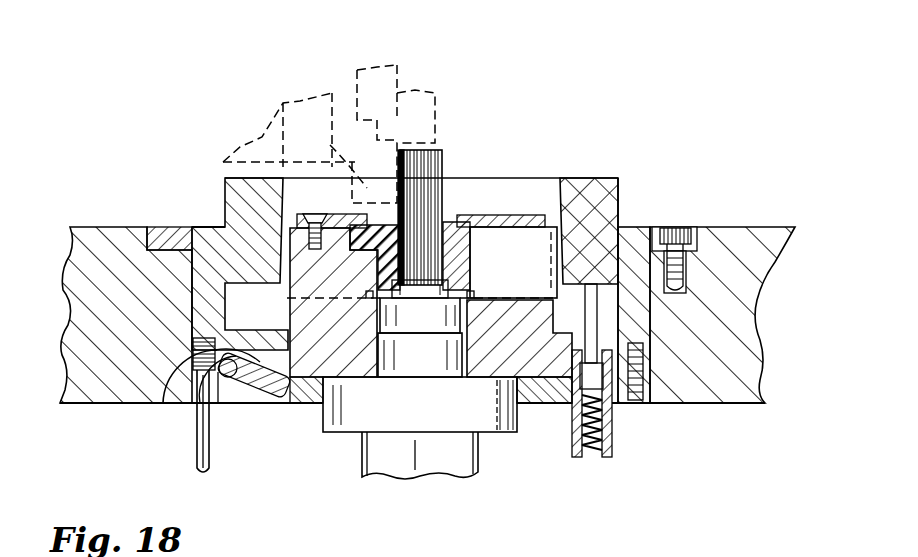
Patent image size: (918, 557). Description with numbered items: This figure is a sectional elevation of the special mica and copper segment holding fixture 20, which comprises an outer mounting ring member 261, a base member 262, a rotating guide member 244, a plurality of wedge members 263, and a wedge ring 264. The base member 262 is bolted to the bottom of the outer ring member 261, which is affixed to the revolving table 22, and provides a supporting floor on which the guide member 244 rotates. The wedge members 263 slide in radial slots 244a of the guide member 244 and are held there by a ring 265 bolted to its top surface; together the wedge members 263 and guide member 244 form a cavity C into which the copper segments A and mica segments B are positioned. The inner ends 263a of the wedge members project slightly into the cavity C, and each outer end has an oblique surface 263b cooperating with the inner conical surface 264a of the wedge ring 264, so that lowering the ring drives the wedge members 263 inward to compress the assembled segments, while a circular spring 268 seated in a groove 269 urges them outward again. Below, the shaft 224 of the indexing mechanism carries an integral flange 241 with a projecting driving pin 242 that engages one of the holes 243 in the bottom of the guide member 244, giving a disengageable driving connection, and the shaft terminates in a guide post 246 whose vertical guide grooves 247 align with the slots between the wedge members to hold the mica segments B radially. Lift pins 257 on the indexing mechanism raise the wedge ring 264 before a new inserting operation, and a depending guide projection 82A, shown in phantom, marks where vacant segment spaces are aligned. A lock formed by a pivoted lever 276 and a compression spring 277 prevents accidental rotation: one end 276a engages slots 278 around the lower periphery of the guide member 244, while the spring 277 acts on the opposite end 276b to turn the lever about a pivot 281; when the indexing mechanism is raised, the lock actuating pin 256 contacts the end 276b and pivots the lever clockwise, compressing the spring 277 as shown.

The holding fixture assembly 20 is at (380, 156).
The revolving table 22 is at (745, 230).
The depending guide projection 82A is at (329, 134).
The shaft 224 is at (470, 455).
The integral flange 241 is at (362, 436).
The driving pin 242 is at (478, 386).
The holes 243 is at (470, 374).
The rotating guide member 244 is at (552, 386).
The radial slots 244a is at (394, 286).
The guide post 246 is at (428, 160).
The vertical guide grooves 247 is at (420, 172).
The lock actuating pin 256 is at (198, 456).
The lift pins 257 is at (610, 415).
The outer mounting ring member 261 is at (205, 226).
The base member 262 is at (645, 402).
The wedge members 263 is at (520, 226).
The inner ends of the wedge members 263a is at (466, 252).
The oblique surface 263b is at (563, 243).
The wedge ring 264 is at (611, 196).
The inner conical surface 264a is at (574, 194).
The ring 265 is at (558, 200).
The circular spring 268 is at (458, 338).
The groove 269 is at (472, 296).
The pivoted lever 276 is at (246, 372).
The end of the lever 276a is at (271, 382).
The opposite end of the lever 276b is at (190, 380).
The compression spring 277 is at (195, 396).
The slots 278 is at (282, 374).
The pivot 281 is at (221, 404).
The copper segments A is at (466, 232).
The mica segments B is at (370, 232).
The cavity C is at (454, 230).